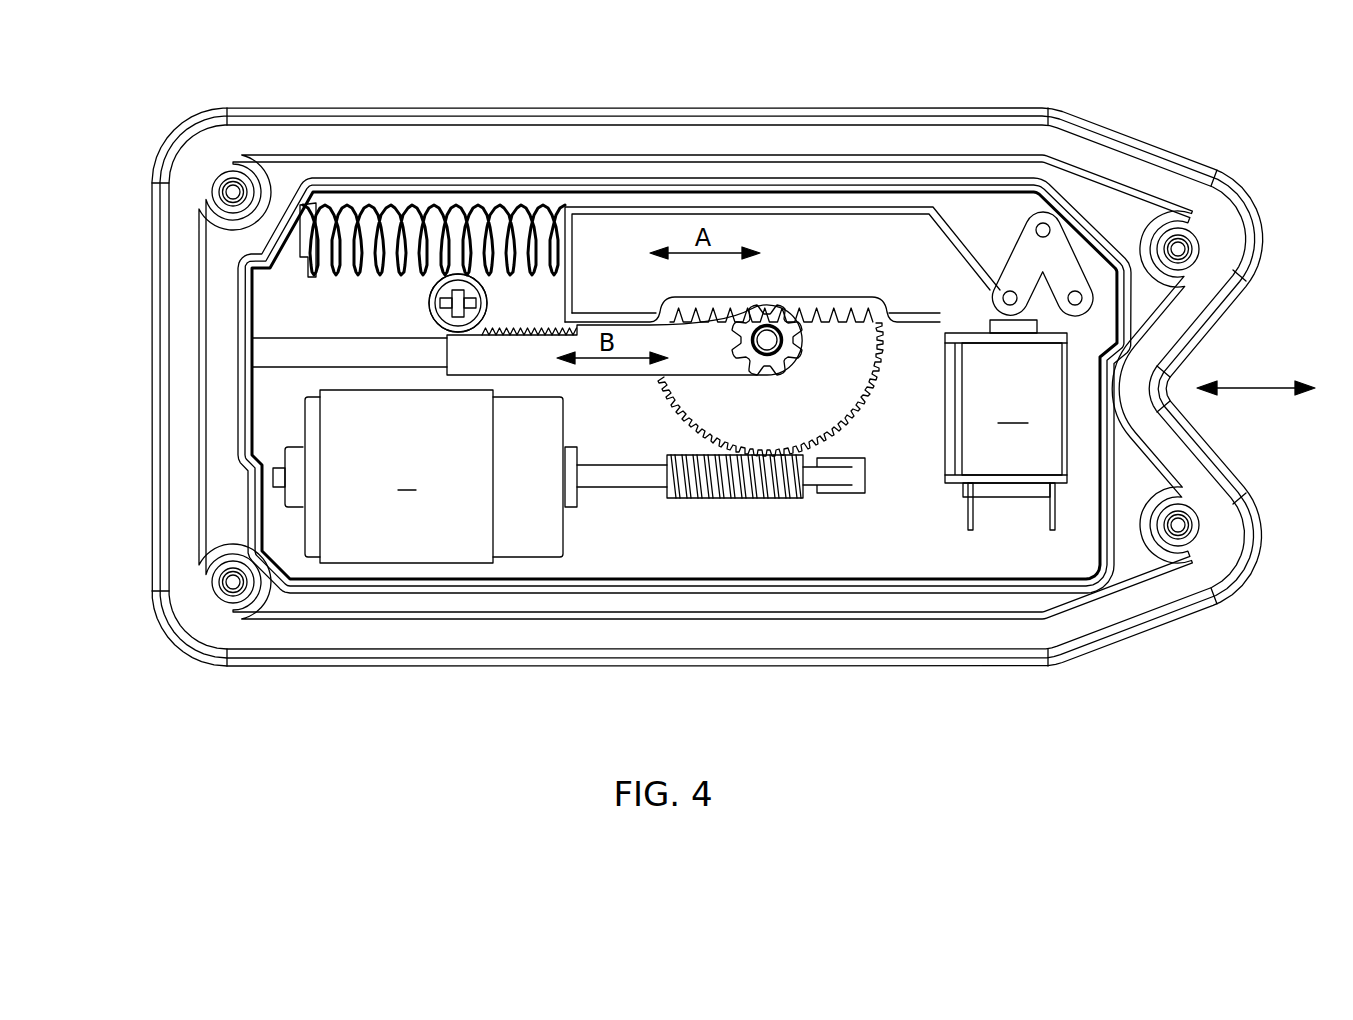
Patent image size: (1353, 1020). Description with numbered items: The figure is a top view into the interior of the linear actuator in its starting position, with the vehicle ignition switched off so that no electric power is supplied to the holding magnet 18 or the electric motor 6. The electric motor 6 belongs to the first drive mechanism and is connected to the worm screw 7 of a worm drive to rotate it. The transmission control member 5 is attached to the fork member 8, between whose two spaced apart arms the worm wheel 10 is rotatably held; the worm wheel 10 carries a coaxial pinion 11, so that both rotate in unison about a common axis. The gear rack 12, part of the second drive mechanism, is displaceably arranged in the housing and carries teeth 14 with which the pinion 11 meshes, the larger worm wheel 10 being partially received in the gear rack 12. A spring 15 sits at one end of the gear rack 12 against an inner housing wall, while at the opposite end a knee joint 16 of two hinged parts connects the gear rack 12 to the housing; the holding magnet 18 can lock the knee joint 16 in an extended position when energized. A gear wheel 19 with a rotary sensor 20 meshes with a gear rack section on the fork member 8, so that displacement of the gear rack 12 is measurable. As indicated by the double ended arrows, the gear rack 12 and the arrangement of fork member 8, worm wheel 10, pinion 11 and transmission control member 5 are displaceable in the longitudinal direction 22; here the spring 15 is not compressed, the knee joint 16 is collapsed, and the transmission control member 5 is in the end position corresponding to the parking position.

The transmission control member 5 is at (297, 348).
The electric motor 6 is at (470, 476).
The worm screw 7 is at (737, 500).
The fork member 8 is at (604, 375).
The worm wheel 10 is at (853, 393).
The pinion 11 is at (790, 350).
The gear rack 12 is at (838, 223).
The teeth 14 is at (787, 308).
The spring 15 is at (372, 210).
The knee joint 16 is at (1068, 262).
The holding magnet 18 is at (1006, 431).
The gear wheel 19 is at (429, 301).
The rotary sensor 20 is at (429, 301).
The longitudinal direction 22 is at (1256, 376).